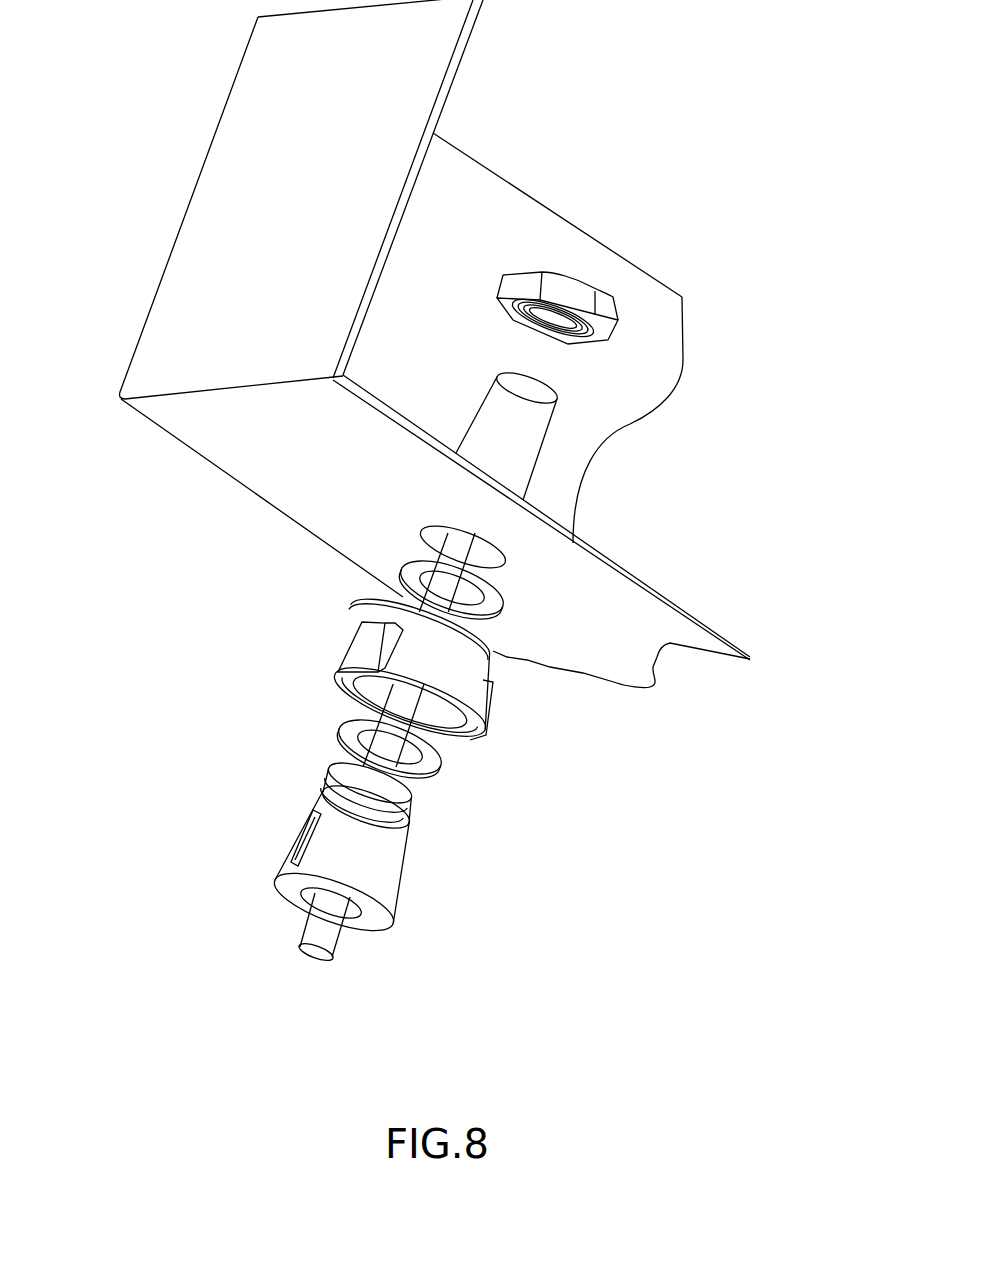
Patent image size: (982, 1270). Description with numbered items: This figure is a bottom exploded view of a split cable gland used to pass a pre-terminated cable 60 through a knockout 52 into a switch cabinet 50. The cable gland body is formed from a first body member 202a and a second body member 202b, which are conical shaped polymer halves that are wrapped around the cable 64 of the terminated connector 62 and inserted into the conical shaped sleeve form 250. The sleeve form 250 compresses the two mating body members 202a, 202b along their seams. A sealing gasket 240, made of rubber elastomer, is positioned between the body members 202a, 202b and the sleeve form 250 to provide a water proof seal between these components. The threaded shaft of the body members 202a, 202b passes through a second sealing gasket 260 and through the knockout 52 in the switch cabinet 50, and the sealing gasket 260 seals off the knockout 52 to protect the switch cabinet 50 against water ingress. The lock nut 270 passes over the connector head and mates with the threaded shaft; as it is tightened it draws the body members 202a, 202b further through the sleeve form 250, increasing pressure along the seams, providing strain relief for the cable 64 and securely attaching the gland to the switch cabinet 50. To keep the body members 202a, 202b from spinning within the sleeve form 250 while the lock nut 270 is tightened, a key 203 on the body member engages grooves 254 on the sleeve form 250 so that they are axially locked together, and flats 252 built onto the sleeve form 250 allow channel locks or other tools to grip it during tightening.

The switch cabinet 50 is at (485, 212).
The lock nut 270 is at (570, 293).
The pre-terminated cable 60 is at (557, 418).
The terminated connector 62 is at (517, 463).
The knockout 52 is at (497, 560).
The sealing gasket 260 is at (403, 573).
The sleeve form 250 is at (350, 653).
The flats 252 is at (363, 657).
The grooves 254 is at (442, 747).
The sealing gasket 240 is at (337, 737).
The second body member 202b is at (393, 880).
The first body member 202a is at (278, 882).
The key 203 is at (300, 828).
The cable 64 is at (327, 930).